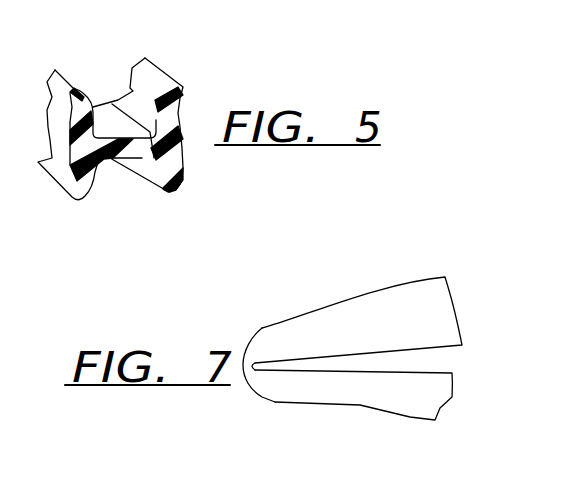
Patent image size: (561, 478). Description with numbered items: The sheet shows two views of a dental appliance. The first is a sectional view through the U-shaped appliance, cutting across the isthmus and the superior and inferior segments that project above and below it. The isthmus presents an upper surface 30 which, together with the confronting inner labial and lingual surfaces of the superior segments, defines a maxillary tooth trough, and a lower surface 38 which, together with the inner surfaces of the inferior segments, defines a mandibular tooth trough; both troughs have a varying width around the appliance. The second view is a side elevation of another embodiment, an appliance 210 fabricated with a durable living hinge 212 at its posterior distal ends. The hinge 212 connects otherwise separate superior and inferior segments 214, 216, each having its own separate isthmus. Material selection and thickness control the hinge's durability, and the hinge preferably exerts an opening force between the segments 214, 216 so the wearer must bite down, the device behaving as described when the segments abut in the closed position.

In FIG. 5, the upper surface 30 is at (112, 127).
In FIG. 5, the lower surface 38 is at (108, 168).
In FIG. 7, the appliance 210 is at (354, 318).
In FIG. 7, the living hinge 212 is at (246, 363).
In FIG. 7, the superior segment 214 is at (412, 278).
In FIG. 7, the inferior segment 216 is at (408, 417).